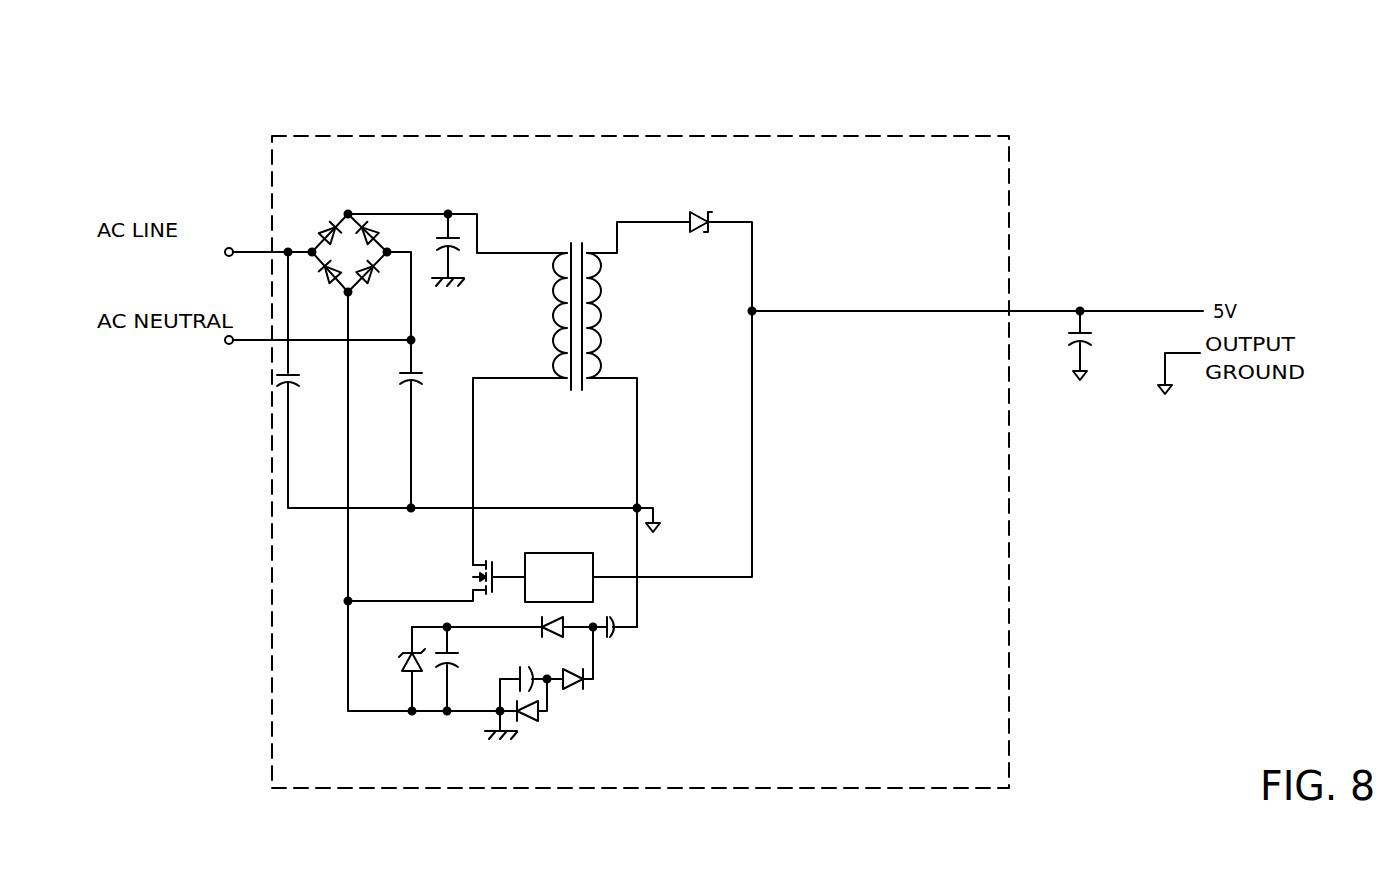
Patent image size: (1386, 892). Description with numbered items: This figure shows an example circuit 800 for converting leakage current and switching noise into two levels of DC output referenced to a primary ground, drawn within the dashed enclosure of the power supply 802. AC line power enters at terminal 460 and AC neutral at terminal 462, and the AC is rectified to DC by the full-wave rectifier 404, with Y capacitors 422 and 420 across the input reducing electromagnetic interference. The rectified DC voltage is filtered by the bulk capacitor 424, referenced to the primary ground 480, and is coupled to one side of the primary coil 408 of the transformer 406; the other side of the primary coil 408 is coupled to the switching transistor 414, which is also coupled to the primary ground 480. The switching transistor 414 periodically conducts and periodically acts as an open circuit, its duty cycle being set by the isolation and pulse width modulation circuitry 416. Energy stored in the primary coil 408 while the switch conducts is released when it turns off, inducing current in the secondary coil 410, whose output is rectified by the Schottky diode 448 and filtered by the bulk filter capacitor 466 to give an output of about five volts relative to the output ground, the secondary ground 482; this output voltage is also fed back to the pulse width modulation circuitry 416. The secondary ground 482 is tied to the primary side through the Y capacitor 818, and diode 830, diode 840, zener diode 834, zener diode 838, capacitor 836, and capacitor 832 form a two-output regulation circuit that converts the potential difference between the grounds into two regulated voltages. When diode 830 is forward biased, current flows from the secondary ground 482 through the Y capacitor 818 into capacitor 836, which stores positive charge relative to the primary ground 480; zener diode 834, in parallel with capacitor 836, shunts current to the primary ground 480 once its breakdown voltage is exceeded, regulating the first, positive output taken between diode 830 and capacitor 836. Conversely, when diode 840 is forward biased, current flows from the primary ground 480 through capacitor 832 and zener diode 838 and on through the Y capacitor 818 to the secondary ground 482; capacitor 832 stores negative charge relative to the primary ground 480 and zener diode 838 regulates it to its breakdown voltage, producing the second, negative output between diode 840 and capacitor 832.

The power supply circuit 800 is at (231, 60).
The power converter enclosure 802 is at (300, 132).
The full-wave rectifier 404 is at (350, 212).
The transformer 406 is at (581, 415).
The primary coil 408 is at (542, 306).
The secondary coil 410 is at (618, 308).
The switching transistor 414 is at (494, 565).
The isolation and pulse width modulation circuitry 416 is at (559, 577).
The Y capacitor 420 is at (406, 384).
The Y capacitor 422 is at (293, 386).
The bulk capacitor 424 is at (445, 238).
The Schottky diode 448 is at (700, 232).
The terminal 460 is at (226, 258).
The terminal 462 is at (226, 346).
The bulk filter capacitor 466 is at (1074, 347).
The primary ground 480 is at (455, 276).
The secondary ground 482 is at (1084, 367).
The Y capacitor 818 is at (614, 638).
The diode 830 is at (548, 624).
The capacitor 832 is at (532, 667).
The zener diode 834 is at (404, 665).
The capacitor 836 is at (453, 667).
The zener diode 838 is at (530, 722).
The diode 840 is at (576, 690).